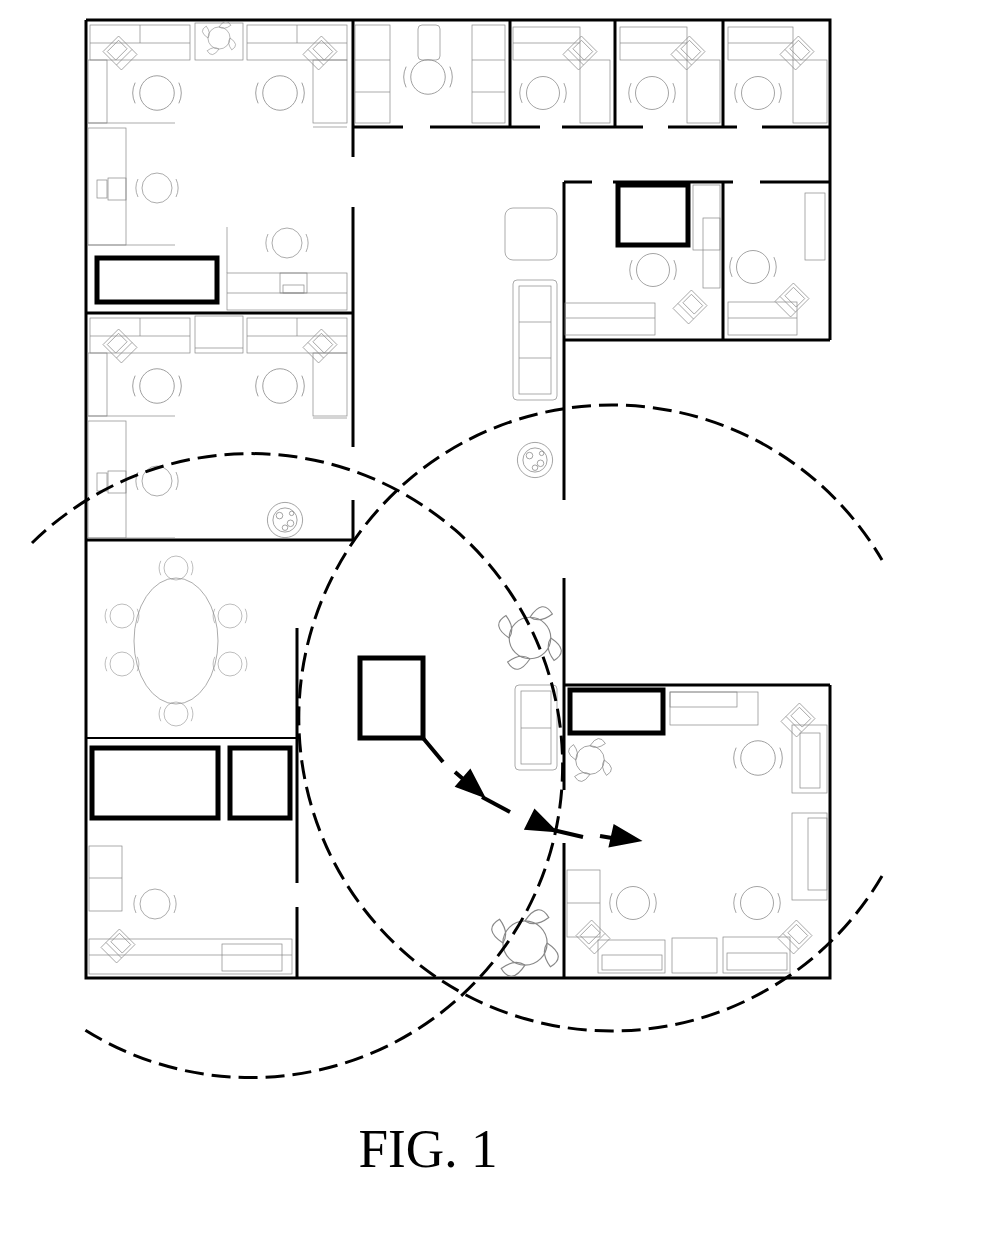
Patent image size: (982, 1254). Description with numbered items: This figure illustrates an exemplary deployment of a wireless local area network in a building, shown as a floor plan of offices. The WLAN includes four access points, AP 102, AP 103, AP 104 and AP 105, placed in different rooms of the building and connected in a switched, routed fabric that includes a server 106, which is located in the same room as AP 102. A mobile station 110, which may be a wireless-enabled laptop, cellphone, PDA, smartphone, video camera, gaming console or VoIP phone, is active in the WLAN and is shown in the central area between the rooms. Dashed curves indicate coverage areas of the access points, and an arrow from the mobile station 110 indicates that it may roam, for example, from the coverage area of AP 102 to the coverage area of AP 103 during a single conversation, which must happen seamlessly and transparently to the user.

The access point 102 is at (243, 810).
The access point 103 is at (652, 726).
The access point 104 is at (193, 292).
The access point 105 is at (672, 238).
The server 106 is at (173, 810).
The mobile station 110 is at (374, 720).